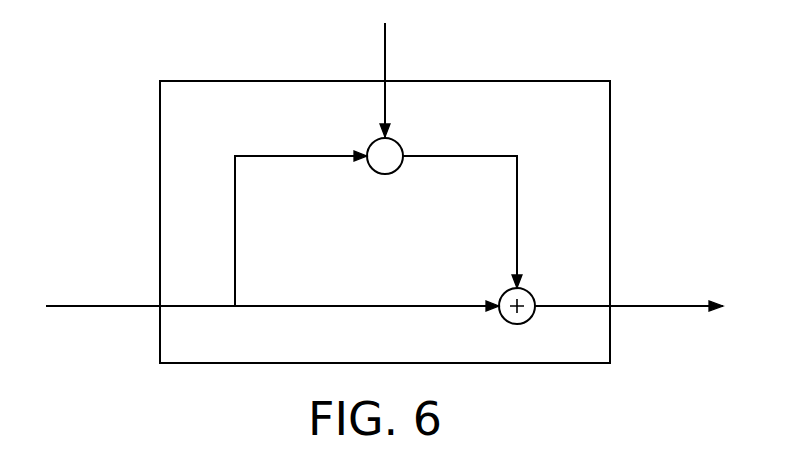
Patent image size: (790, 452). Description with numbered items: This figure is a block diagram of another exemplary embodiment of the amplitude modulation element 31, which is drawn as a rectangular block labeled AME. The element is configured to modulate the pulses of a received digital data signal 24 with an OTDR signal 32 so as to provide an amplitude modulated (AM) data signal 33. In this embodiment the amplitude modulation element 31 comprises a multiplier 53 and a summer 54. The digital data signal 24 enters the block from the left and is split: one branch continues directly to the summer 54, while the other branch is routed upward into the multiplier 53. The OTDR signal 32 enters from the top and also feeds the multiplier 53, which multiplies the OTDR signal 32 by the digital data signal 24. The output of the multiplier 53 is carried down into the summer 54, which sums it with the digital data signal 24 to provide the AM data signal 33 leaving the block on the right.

The amplitude modulation element 31 is at (553, 81).
The digital data signal 24 is at (85, 305).
The OTDR signal 32 is at (385, 40).
The multiplier 53 is at (397, 143).
The summer 54 is at (528, 293).
The AM data signal 33 is at (638, 305).